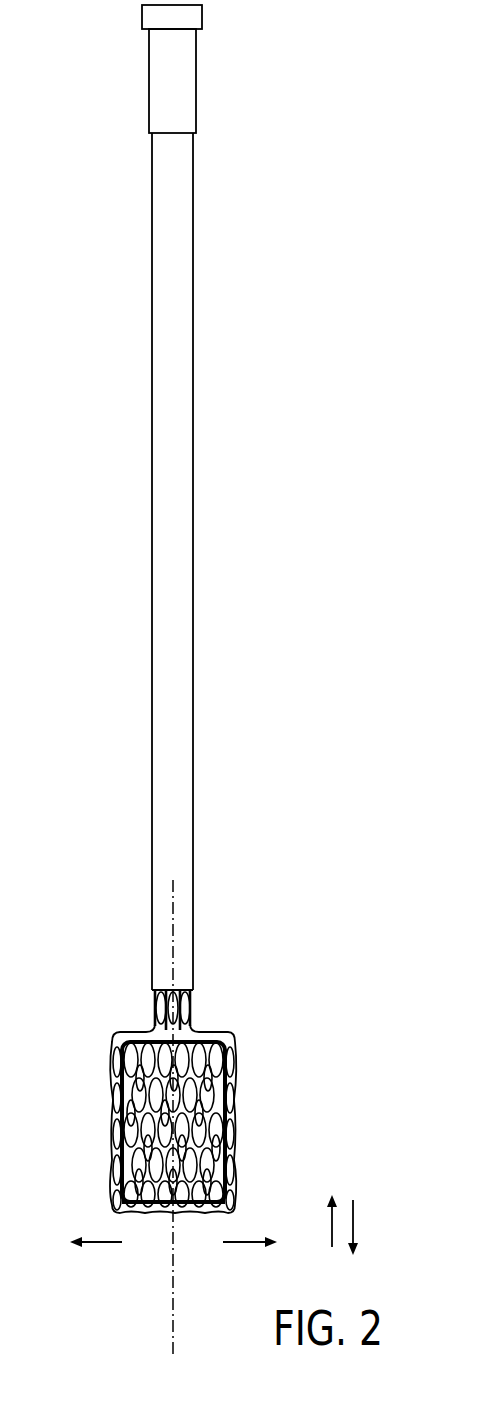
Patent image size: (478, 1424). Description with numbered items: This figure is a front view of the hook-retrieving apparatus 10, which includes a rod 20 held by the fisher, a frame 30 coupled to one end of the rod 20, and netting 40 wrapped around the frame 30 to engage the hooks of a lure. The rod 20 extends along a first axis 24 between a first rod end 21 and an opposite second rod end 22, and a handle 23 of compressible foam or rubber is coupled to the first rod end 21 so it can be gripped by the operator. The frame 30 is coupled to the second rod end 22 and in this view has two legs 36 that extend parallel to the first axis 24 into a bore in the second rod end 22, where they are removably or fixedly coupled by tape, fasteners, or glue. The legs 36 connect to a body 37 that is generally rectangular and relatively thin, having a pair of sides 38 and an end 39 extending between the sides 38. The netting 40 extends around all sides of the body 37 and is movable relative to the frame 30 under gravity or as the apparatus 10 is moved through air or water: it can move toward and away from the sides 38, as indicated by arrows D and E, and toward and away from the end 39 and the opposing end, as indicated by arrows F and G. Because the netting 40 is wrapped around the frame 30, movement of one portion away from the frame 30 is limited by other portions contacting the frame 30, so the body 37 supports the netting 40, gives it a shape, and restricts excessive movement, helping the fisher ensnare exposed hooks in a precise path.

The apparatus 10 is at (258, 349).
The rod 20 is at (186, 245).
The first rod end 21 is at (226, 62).
The second rod end 22 is at (222, 972).
The handle 23 is at (160, 85).
The first axis 24 is at (173, 1318).
The frame 30 is at (235, 1092).
The legs 36 is at (155, 1012).
The body 37 is at (230, 1165).
The sides 38 is at (120, 1130).
The end 39 is at (185, 1212).
The netting 40 is at (108, 1086).
The arrow D is at (100, 1243).
The arrow E is at (245, 1243).
The arrow F is at (330, 1228).
The arrow G is at (355, 1222).